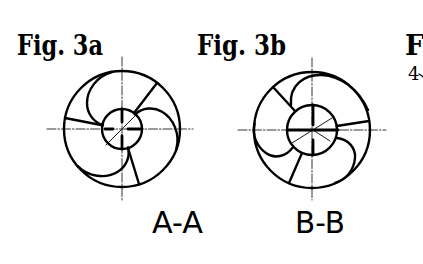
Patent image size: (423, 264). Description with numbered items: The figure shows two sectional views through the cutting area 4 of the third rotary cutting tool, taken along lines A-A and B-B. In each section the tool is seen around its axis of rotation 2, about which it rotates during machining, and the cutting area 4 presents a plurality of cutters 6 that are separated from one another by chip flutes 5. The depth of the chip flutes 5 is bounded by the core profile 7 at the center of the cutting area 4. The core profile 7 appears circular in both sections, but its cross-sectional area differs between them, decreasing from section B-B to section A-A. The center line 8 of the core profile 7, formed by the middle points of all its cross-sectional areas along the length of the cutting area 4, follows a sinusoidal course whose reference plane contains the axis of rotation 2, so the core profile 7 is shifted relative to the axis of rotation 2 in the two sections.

In FIG. 3A, the axis of rotation 2 is at (110, 147).
In FIG. 3B, the axis of rotation 2 is at (297, 152).
In FIG. 3A, the cutting area 4 is at (63, 101).
In FIG. 3B, the cutting area 4 is at (252, 100).
In FIG. 3A, the chip flutes 5 is at (157, 100).
In FIG. 3B, the chip flutes 5 is at (300, 72).
In FIG. 3A, the cutters 6 is at (133, 83).
In FIG. 3B, the cutters 6 is at (344, 100).
In FIG. 3A, the core profile 7 is at (141, 138).
In FIG. 3B, the core profile 7 is at (339, 135).
In FIG. 3A, the center line 8 is at (134, 147).
In FIG. 3B, the center line 8 is at (333, 148).